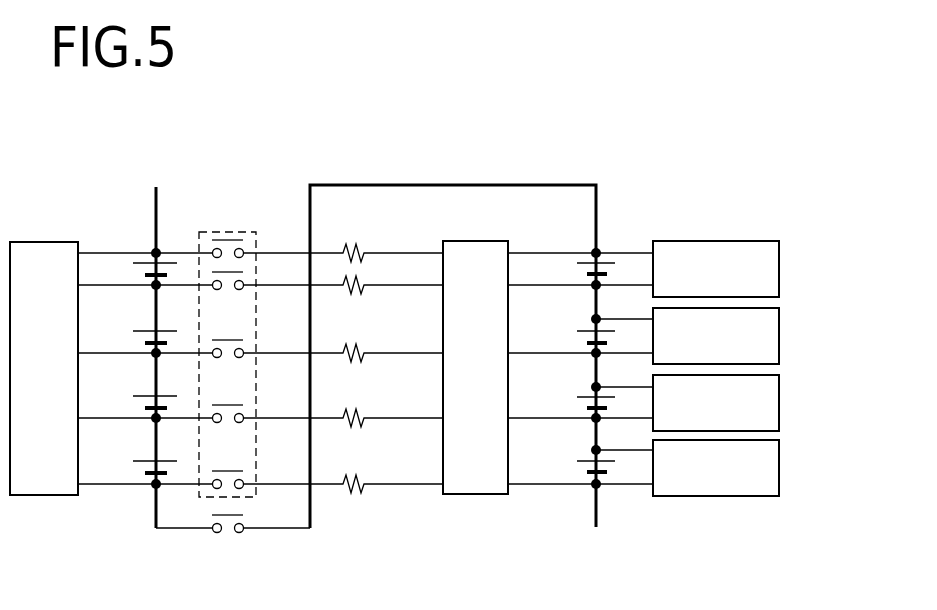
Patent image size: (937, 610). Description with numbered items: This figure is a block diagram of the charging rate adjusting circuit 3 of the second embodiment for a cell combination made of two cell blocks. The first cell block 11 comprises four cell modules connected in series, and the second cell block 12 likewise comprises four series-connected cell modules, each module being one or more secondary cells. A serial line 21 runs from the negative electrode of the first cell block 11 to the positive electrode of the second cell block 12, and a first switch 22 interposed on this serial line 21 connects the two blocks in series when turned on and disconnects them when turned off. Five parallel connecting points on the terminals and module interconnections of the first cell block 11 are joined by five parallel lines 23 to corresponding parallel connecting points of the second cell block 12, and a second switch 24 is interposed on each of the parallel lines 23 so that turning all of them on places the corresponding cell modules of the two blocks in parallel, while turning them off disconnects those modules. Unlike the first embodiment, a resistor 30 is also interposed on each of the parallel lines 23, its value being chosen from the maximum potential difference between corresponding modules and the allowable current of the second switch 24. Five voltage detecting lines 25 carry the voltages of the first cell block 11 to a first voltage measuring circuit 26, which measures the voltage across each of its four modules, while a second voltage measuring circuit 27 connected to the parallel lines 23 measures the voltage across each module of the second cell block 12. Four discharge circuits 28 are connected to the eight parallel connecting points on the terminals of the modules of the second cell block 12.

The charging rate adjusting circuit 3 is at (384, 136).
The first cell block 11 is at (186, 171).
The second cell block 12 is at (624, 216).
The serial line 21 is at (382, 185).
The first switch 22 is at (228, 537).
The parallel lines 23 is at (171, 252).
The second switch 24 is at (222, 233).
The voltage detecting lines 25 is at (88, 251).
The first voltage measuring circuit 26 is at (34, 242).
The second voltage measuring circuit 27 is at (466, 241).
The discharge circuits 28 is at (781, 270).
The resistor 30 is at (354, 241).